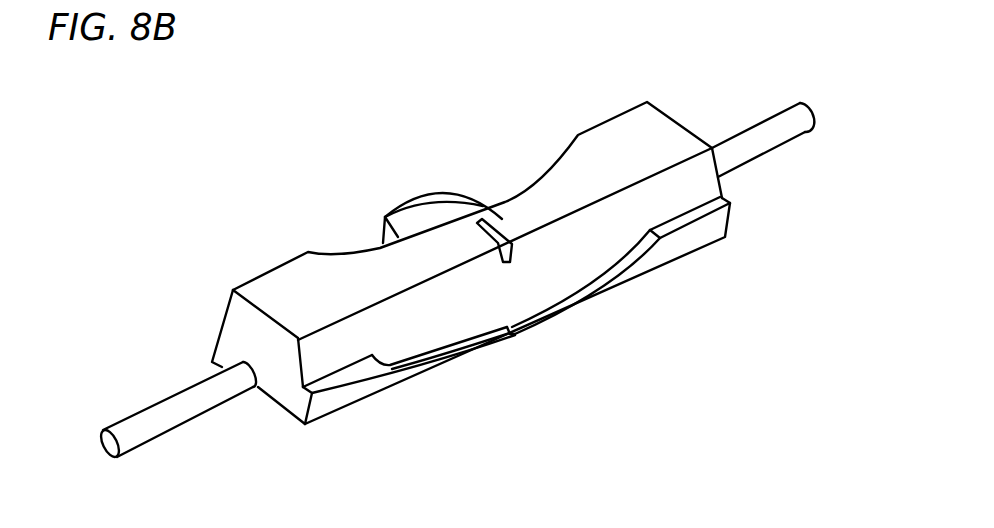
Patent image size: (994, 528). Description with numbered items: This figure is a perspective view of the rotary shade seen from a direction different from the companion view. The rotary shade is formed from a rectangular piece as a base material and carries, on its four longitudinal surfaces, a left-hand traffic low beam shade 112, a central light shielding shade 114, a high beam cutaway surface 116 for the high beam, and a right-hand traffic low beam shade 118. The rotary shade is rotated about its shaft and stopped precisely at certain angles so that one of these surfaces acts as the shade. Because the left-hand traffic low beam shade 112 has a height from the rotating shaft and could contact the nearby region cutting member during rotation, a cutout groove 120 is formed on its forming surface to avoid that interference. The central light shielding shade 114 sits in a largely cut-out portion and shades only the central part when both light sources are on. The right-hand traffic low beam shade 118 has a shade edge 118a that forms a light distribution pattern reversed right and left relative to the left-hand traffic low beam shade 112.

The left-hand traffic low beam shade 112 is at (642, 140).
The central light shielding shade 114 is at (423, 203).
The high beam cutaway surface 116 is at (278, 410).
The right-hand traffic low beam shade 118 is at (625, 283).
The shade edge 118a is at (458, 355).
The cutout groove 120 is at (492, 218).